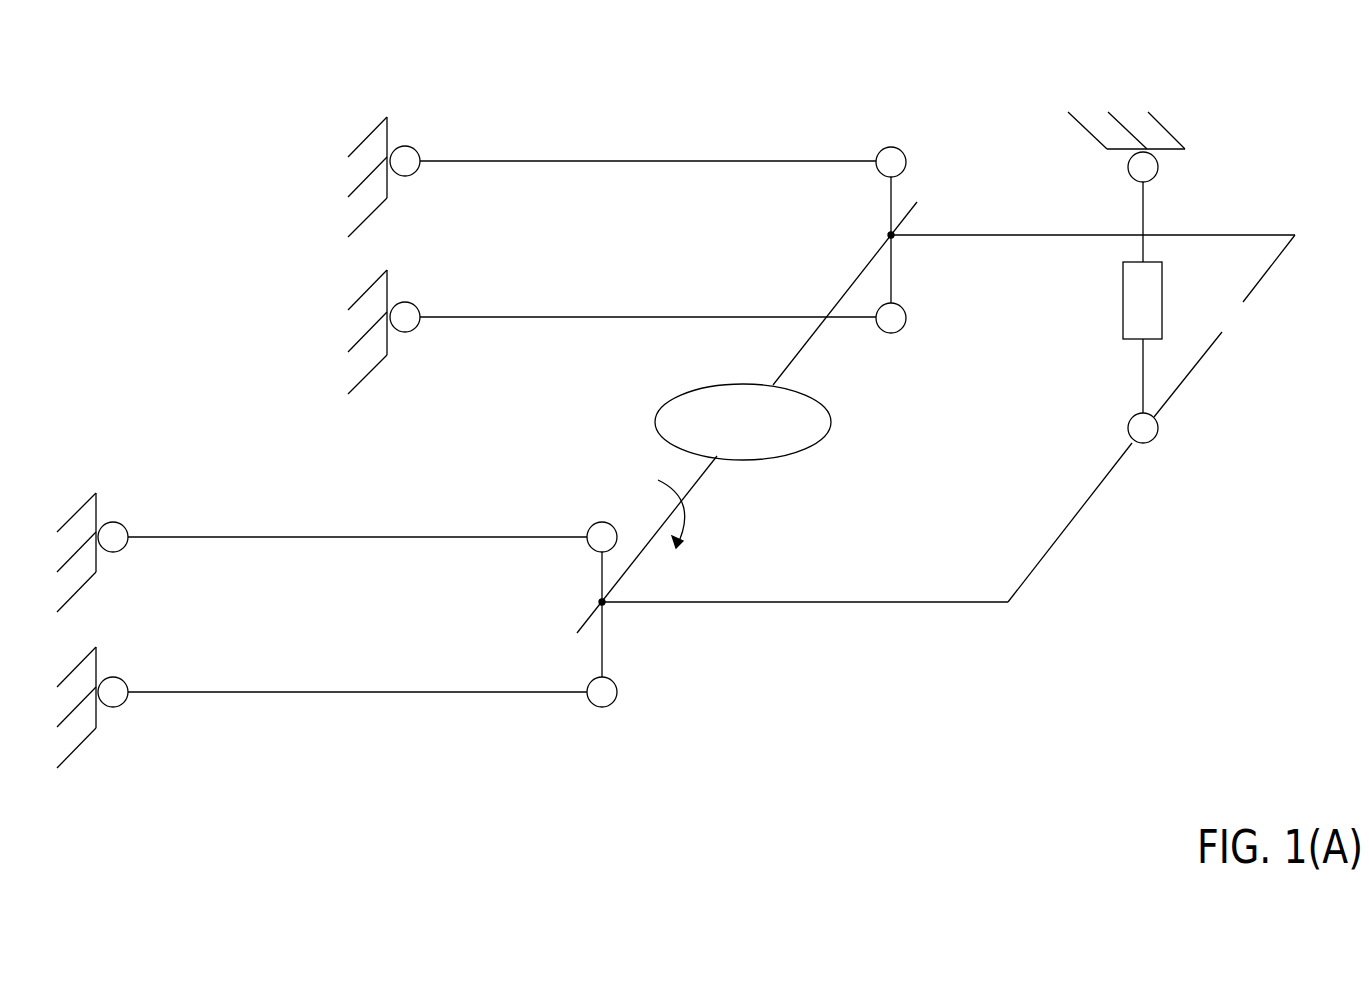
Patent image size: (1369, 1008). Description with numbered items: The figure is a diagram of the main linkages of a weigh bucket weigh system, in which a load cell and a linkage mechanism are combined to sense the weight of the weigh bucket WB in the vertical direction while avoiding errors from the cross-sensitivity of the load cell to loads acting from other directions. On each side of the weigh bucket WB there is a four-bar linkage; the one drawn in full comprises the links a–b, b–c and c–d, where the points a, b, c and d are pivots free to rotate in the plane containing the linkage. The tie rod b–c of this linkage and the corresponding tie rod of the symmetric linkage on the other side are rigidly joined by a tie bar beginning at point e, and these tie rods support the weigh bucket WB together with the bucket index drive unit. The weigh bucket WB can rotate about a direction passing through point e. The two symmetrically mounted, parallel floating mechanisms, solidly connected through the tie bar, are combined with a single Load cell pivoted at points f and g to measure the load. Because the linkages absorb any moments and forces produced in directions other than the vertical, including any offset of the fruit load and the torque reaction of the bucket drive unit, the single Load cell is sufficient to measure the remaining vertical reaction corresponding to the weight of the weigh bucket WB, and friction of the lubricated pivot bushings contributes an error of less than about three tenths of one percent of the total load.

The pivot a is at (92, 552).
The pivot b is at (602, 524).
The pivot c is at (601, 708).
The pivot d is at (92, 707).
The point e is at (594, 600).
The point f is at (1133, 429).
The point g is at (1126, 147).
The weigh bucket WB is at (743, 422).
The load cell Load cell is at (1212, 300).